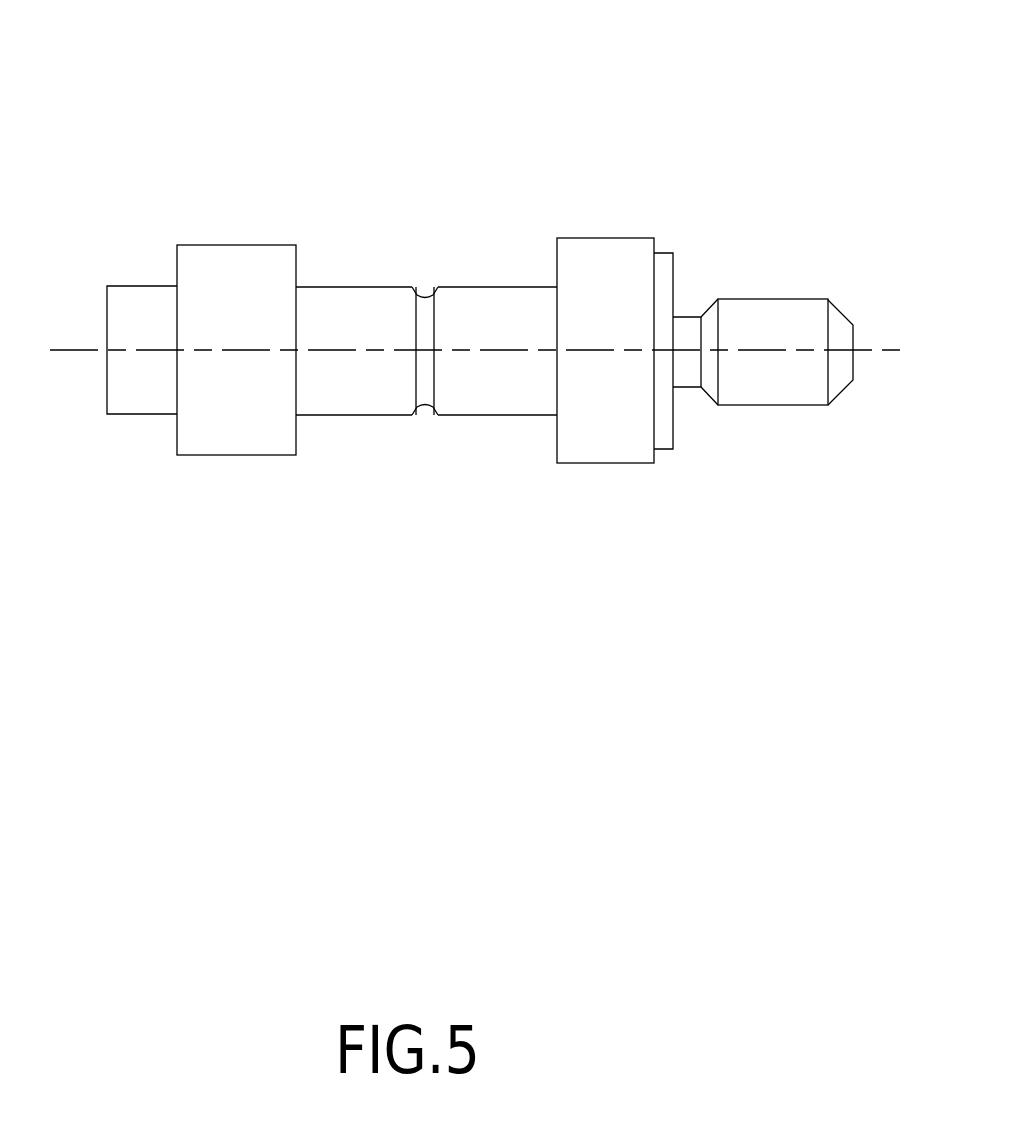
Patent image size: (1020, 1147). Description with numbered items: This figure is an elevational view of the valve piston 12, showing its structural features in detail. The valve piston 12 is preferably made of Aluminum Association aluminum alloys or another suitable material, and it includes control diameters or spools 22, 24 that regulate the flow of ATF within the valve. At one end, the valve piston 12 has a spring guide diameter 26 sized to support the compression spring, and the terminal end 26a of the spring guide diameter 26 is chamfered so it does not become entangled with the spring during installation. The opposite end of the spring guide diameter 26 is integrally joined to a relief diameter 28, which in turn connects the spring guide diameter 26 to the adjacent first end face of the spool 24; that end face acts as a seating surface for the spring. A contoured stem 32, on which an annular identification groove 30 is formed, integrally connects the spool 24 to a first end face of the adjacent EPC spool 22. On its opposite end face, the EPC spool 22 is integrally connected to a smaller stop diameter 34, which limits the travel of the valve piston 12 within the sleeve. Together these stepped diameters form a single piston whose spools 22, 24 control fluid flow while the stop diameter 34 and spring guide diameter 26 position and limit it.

The valve piston 12 is at (507, 103).
The EPC spool 22 is at (235, 248).
The spool 24 is at (598, 243).
The spring guide diameter 26 is at (758, 303).
The terminal end 26a is at (838, 382).
The relief diameter 28 is at (683, 315).
The annular identification groove 30 is at (423, 287).
The contoured stem 32 is at (355, 287).
The stop diameter 34 is at (118, 287).